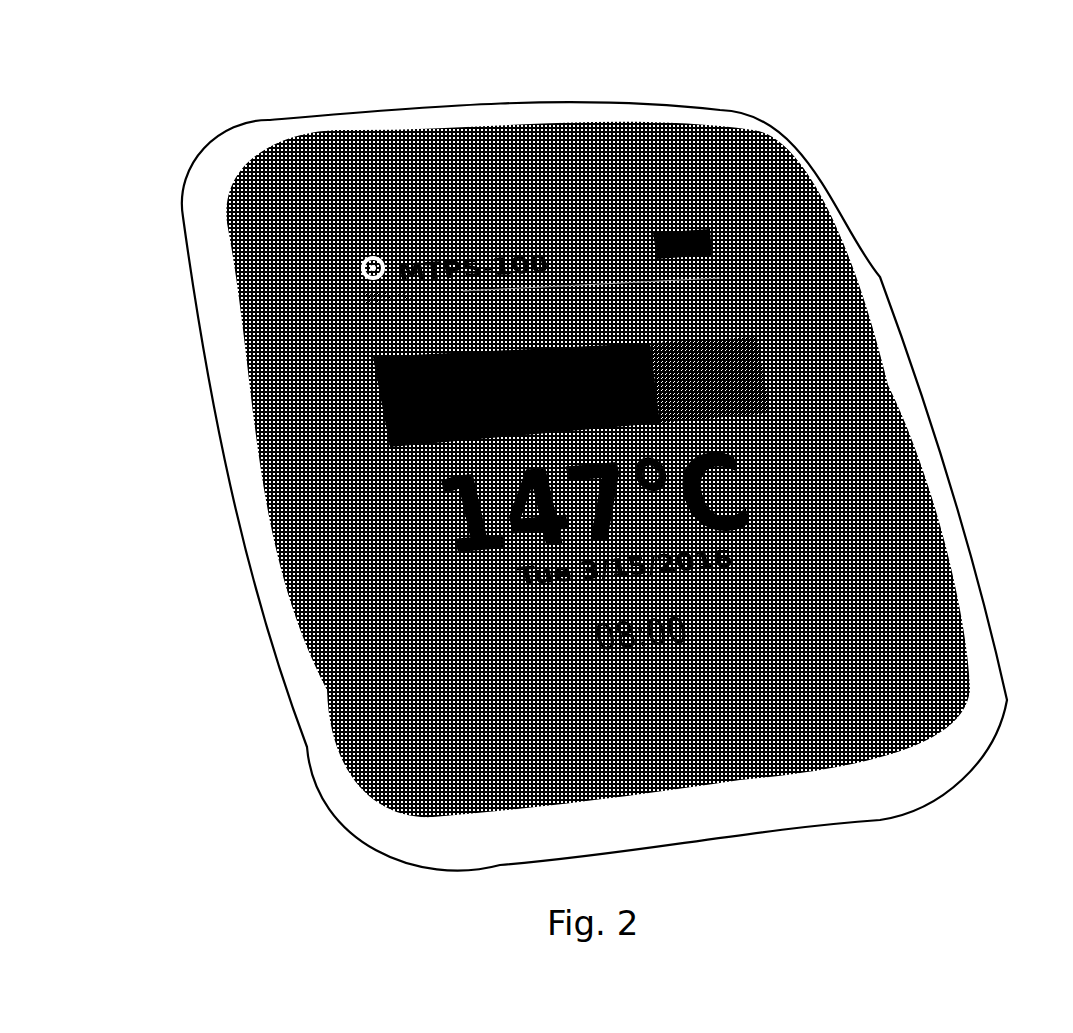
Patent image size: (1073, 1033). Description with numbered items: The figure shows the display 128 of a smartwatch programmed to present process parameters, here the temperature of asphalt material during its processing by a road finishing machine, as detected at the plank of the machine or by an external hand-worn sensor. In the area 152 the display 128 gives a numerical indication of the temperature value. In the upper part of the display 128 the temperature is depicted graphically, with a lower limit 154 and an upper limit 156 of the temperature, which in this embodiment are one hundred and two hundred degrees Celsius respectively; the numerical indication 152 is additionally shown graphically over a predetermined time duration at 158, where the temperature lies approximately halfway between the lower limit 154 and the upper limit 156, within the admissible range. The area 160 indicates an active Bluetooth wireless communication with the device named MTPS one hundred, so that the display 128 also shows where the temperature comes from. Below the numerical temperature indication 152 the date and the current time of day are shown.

The display 128 is at (264, 828).
The area with numerical indication of the temperature value 152 is at (763, 475).
The lower limit 154 is at (777, 381).
The upper limit 156 is at (723, 277).
The graphical depiction of the temperature over a predetermined time duration 158 is at (390, 397).
The area indicating wireless communication 160 is at (372, 258).